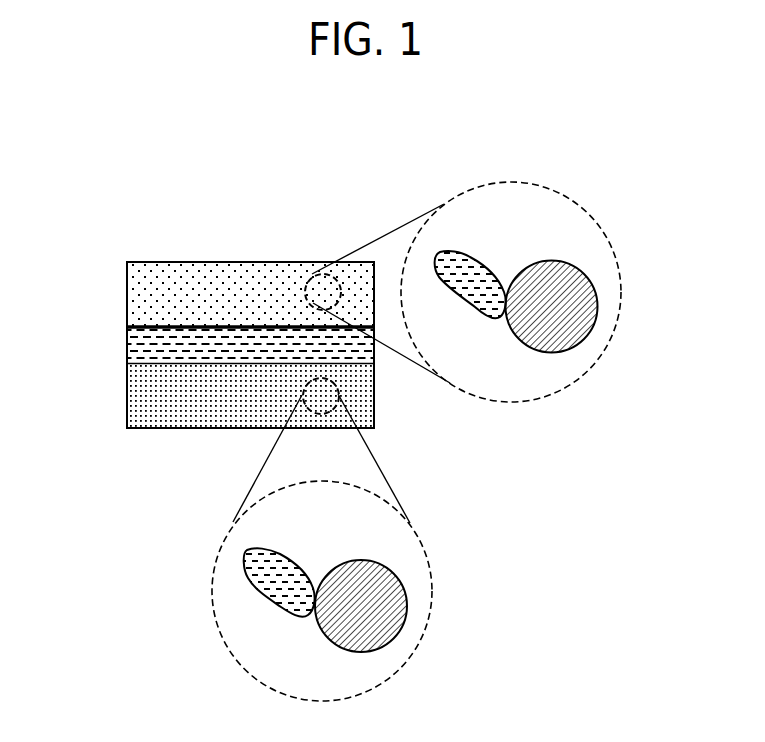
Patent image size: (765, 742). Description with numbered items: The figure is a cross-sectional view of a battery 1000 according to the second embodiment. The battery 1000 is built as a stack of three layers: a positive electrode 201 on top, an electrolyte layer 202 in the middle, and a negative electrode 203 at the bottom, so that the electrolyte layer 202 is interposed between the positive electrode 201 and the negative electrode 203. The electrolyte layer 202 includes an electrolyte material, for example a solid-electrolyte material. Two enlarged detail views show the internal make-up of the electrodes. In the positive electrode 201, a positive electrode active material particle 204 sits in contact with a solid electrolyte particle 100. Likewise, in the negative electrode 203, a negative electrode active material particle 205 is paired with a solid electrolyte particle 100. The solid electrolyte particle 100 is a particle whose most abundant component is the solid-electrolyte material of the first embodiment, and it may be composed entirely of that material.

The battery 1000 is at (278, 219).
The positive electrode 201 is at (158, 280).
The electrolyte layer 202 is at (157, 342).
The negative electrode 203 is at (157, 395).
The positive electrode active material particle 204 is at (567, 306).
The negative electrode active material particle 205 is at (380, 600).
The solid electrolyte particle 100 is at (490, 318).